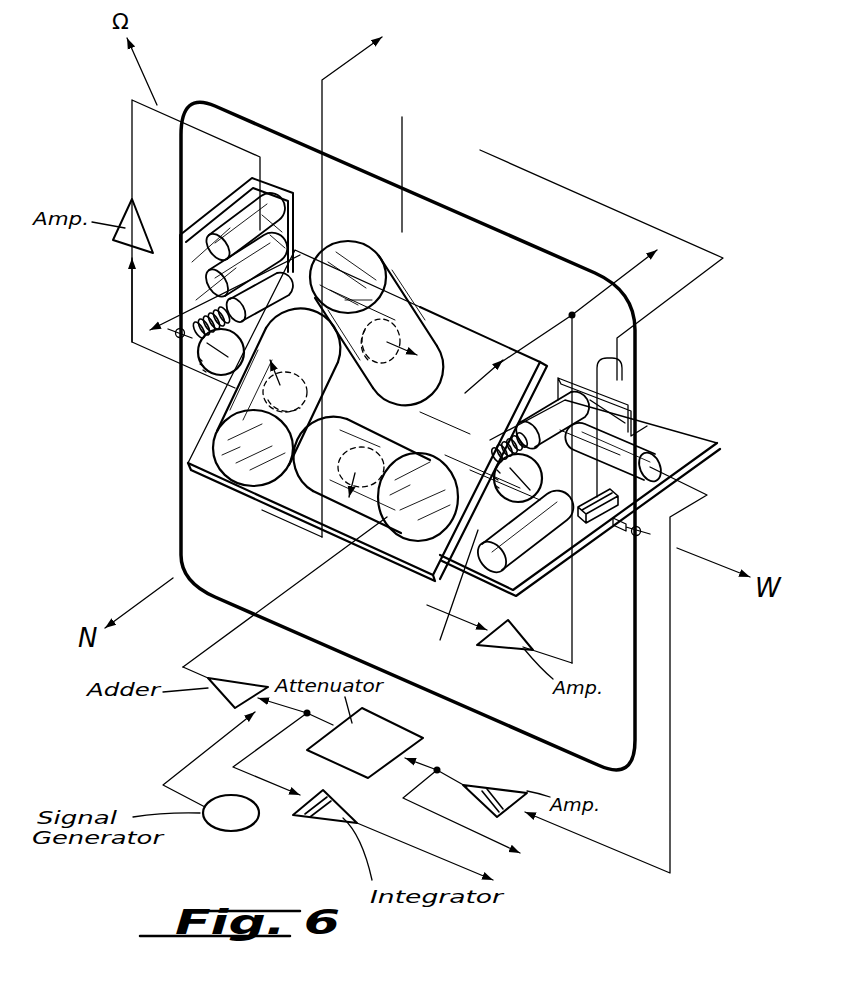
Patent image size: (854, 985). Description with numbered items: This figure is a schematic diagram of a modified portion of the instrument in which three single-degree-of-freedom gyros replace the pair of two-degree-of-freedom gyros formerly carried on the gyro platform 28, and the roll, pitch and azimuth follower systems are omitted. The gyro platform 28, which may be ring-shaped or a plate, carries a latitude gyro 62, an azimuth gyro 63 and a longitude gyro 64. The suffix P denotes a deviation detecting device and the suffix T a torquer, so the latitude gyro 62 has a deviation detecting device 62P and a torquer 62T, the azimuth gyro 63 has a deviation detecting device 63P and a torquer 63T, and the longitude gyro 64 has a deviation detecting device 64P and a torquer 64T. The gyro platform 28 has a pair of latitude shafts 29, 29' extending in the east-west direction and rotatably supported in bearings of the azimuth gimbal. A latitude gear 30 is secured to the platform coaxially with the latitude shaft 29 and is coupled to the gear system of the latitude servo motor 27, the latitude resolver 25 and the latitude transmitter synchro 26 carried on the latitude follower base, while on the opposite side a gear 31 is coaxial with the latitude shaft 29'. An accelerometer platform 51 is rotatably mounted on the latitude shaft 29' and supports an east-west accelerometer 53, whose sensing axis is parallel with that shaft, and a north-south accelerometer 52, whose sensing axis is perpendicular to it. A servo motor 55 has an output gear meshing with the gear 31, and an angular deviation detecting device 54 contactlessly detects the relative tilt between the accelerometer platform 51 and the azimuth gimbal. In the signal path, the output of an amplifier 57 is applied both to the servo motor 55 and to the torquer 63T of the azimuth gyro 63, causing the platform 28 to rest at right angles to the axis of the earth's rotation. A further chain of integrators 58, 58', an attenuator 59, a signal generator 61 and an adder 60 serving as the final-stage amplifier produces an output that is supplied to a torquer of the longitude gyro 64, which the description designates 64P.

The latitude resolver 25 is at (247, 220).
The latitude transmitter synchro 26 is at (240, 258).
The latitude servo motor 27 is at (304, 262).
The gyro platform 28 is at (414, 573).
The latitude shaft 29 is at (162, 359).
The latitude shaft 29' is at (624, 548).
The latitude gear 30 is at (218, 378).
The gear 31 is at (450, 595).
The accelerometer platform 51 is at (557, 567).
The north-south accelerometer 52 is at (500, 567).
The east-west accelerometer 53 is at (668, 437).
The angular deviation detecting device 54 is at (612, 366).
The servo motor 55 is at (548, 400).
The amplifier 57 is at (498, 650).
The integrator 58 is at (325, 830).
The integrator 58' is at (495, 780).
The attenuator 59 is at (404, 724).
The adder 60 is at (240, 682).
The signal generator 61 is at (230, 833).
The latitude gyro 62 is at (212, 420).
The deviation detecting device 62P is at (246, 467).
The torquer 62T is at (317, 324).
The azimuth gyro 63 is at (400, 325).
The deviation detecting device 63P is at (378, 296).
The torquer 63T is at (440, 378).
The longitude gyro 64 is at (328, 540).
The deviation detecting device 64P is at (277, 495).
The torquer 64T is at (384, 548).